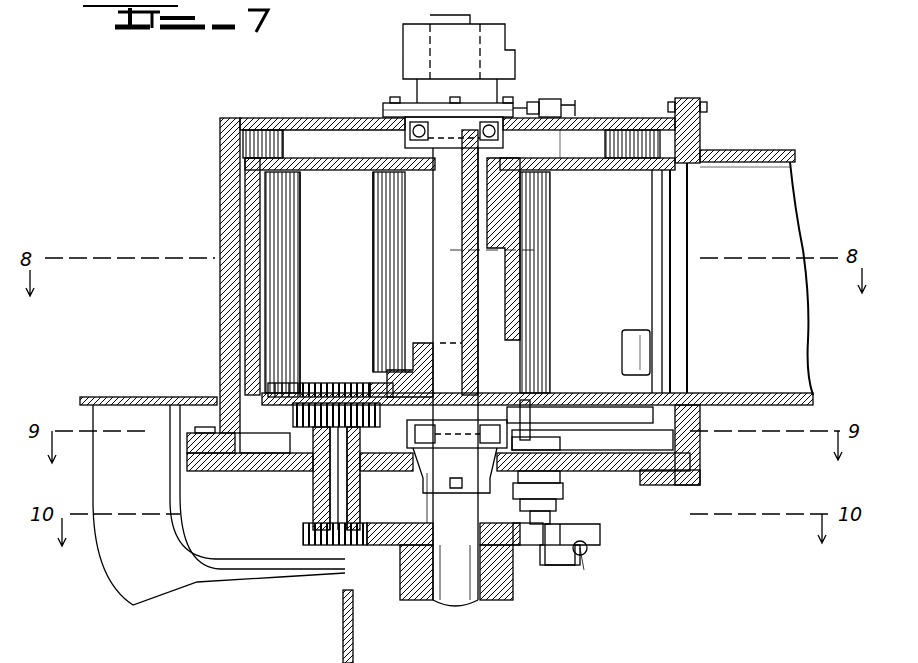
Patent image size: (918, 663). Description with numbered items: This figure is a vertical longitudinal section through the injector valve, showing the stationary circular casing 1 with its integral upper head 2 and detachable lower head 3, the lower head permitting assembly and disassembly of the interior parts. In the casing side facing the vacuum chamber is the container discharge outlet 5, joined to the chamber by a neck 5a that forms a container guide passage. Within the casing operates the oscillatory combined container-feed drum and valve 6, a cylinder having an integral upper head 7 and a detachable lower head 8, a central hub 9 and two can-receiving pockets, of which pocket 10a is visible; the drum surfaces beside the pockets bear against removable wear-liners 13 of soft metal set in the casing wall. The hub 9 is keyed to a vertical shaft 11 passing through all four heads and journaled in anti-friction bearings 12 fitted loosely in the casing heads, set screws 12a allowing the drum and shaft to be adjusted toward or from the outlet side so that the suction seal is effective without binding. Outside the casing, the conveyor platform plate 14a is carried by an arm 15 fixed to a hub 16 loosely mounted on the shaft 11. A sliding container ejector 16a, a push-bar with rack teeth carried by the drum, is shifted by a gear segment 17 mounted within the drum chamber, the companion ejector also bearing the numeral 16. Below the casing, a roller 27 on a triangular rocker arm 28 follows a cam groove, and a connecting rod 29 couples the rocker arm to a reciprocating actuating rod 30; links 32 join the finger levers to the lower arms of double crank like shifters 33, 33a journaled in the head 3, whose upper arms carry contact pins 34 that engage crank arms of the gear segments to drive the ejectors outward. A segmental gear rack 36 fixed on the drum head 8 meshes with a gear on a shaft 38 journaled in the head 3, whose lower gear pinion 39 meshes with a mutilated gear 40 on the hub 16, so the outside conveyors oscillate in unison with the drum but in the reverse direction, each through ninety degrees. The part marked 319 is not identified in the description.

The stationary circular casing 1 is at (218, 233).
The upper head 2 is at (296, 118).
The lower head 3 is at (260, 471).
The container discharge outlet 5 is at (686, 355).
The neck 5a is at (776, 138).
The combined container-feed drum and valve 6 is at (248, 278).
The upper head of drum 7 is at (336, 158).
The lower head of drum 8 is at (564, 393).
The central hub 9 is at (418, 348).
The can-receiving pocket 10a is at (531, 272).
The shaft 11 is at (440, 290).
The anti-friction bearings 12 is at (500, 108).
The set screws 12a is at (560, 100).
The wear-liners 13 is at (683, 203).
The conveyor member 14a is at (115, 397).
The arm 15 is at (200, 590).
The hub 16 is at (372, 380).
The sliding container ejector 16a is at (624, 340).
The gear segment 17 is at (332, 385).
The roller 27 is at (295, 470).
The triangular rocker arm 28 is at (520, 547).
The connecting rod 29 is at (560, 565).
The actuating rod 30 is at (583, 570).
The links 32 is at (566, 488).
The double crank like shifter 33 is at (575, 445).
The double crank like shifter 33a is at (470, 545).
The contact pin 34 is at (560, 415).
The segmental gear rack 36 is at (235, 470).
The shaft 38 is at (345, 500).
The gear pinion 39 is at (322, 545).
The mutilated gear 40 is at (376, 523).
The bracket arm 319 is at (598, 535).